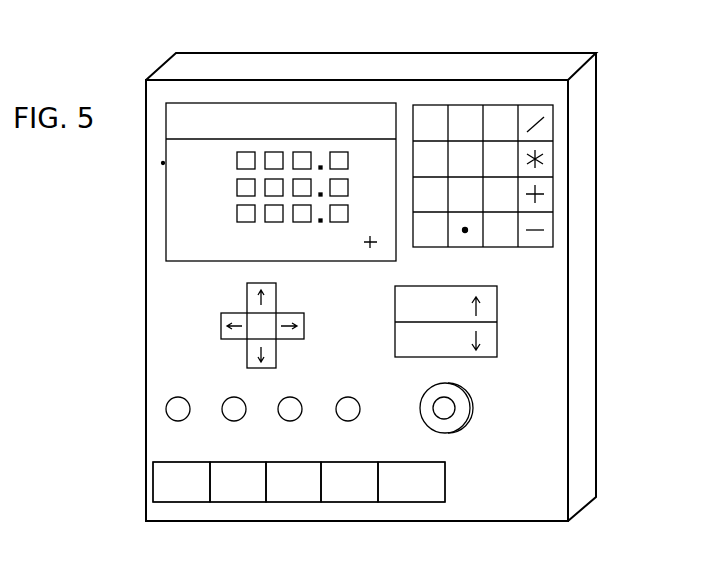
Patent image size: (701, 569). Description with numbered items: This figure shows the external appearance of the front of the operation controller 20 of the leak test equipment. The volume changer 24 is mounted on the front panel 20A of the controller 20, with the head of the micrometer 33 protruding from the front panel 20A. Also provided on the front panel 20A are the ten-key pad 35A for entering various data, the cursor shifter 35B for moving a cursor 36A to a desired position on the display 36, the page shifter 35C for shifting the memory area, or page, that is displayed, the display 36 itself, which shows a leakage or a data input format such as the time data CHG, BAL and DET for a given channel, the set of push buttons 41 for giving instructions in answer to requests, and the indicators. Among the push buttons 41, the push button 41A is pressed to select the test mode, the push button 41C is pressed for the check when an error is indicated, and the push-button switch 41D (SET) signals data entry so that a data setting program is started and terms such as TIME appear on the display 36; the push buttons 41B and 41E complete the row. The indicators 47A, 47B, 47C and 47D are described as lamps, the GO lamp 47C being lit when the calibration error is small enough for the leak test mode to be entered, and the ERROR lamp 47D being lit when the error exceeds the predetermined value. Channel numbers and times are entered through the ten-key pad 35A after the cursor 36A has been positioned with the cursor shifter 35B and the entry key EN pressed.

The operation controller 20 is at (596, 388).
The front panel 20A is at (524, 510).
The volume changer 24 is at (470, 419).
The micrometer 33 is at (456, 396).
The ten-key pad 35A is at (508, 105).
The cursor shift key 35B is at (221, 321).
The page shift key 35C is at (498, 330).
The display device 36 is at (185, 262).
The cursor 36A is at (362, 263).
The push buttons 41 is at (152, 483).
The push button 41A is at (190, 503).
The CALB key 41B is at (256, 503).
The push button 41C is at (309, 503).
The push-button switch 41D is at (363, 503).
The START key 41E is at (430, 503).
The indicator lamp 47A is at (175, 397).
The indicator lamp 47B is at (230, 397).
The GO lamp 47C is at (299, 397).
The ERROR lamp 47D is at (357, 397).